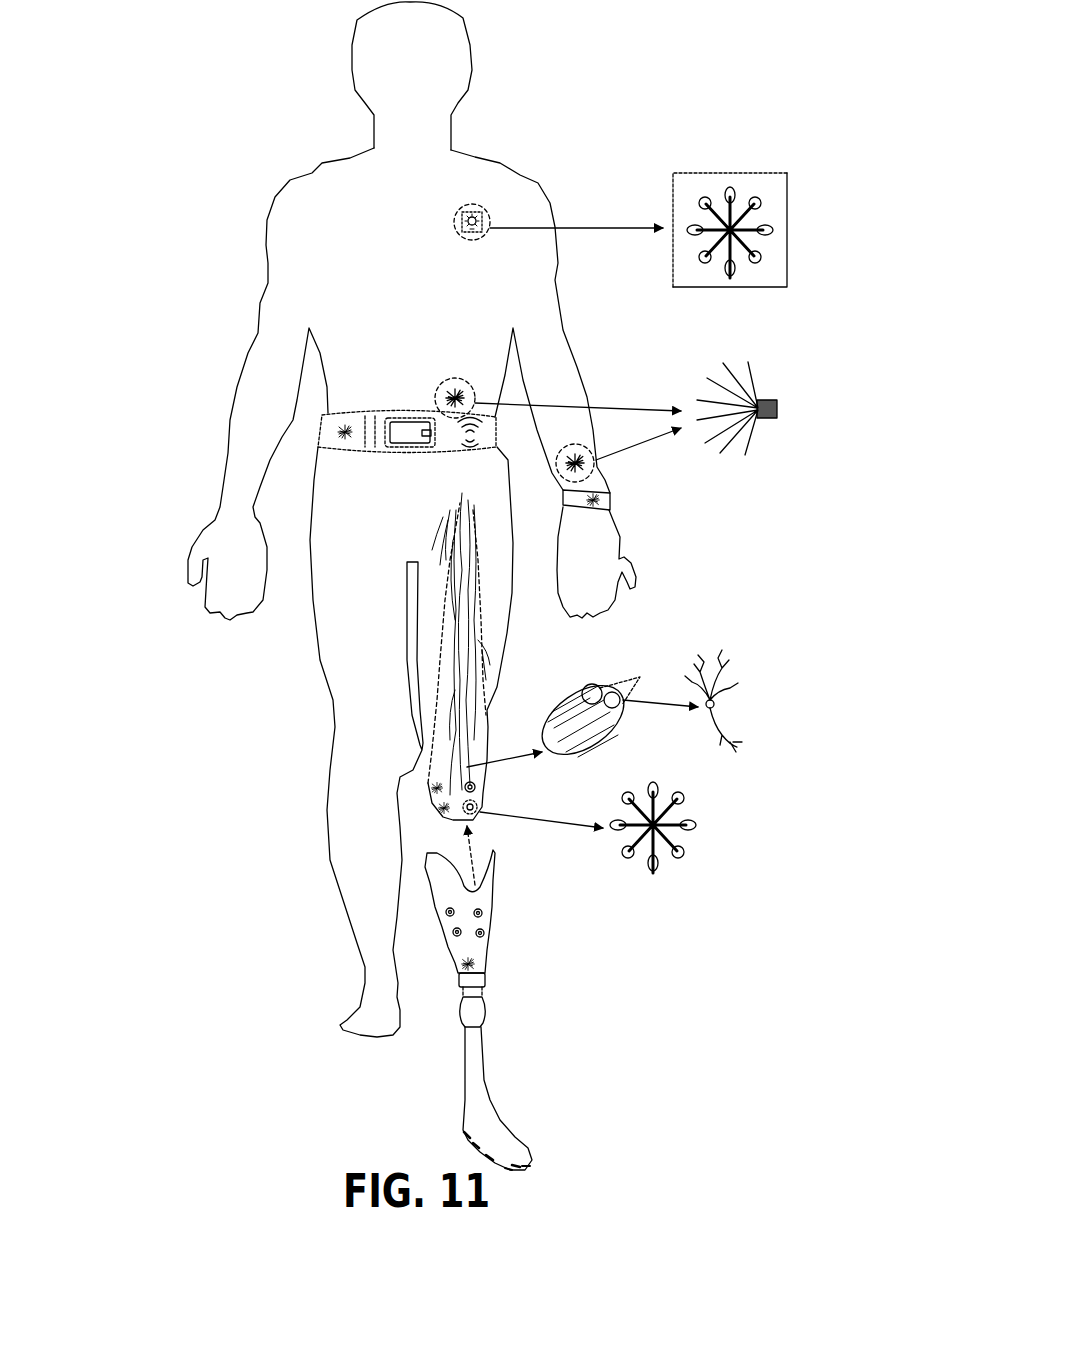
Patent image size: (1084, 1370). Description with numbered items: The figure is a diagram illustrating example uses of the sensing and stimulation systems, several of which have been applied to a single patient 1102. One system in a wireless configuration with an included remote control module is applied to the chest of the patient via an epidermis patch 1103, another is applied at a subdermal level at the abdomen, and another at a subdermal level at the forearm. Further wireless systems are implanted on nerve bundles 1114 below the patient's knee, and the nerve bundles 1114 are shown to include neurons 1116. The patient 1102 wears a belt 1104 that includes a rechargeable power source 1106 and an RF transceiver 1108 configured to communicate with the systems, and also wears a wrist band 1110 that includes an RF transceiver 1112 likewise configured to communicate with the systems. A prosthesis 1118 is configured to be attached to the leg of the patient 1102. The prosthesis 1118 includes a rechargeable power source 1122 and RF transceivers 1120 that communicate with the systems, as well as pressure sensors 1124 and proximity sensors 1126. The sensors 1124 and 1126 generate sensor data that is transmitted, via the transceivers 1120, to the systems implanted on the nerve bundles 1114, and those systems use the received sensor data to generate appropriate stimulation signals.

The patient 1102 is at (325, 160).
The epidermis patch 1103 is at (728, 173).
The belt 1104 is at (398, 420).
The rechargeable power source 1106 is at (345, 425).
The RF transceiver 1108 is at (475, 447).
The wrist band 1110 is at (603, 508).
The RF transceiver 1112 is at (605, 494).
The nerve bundles 1114 is at (482, 652).
The neurons 1116 is at (714, 707).
The prosthesis 1118 is at (458, 1068).
The RF transceivers 1120 is at (482, 914).
The rechargeable power source 1122 is at (478, 968).
The pressure sensors 1124 is at (460, 1130).
The proximity sensors 1126 is at (525, 1166).